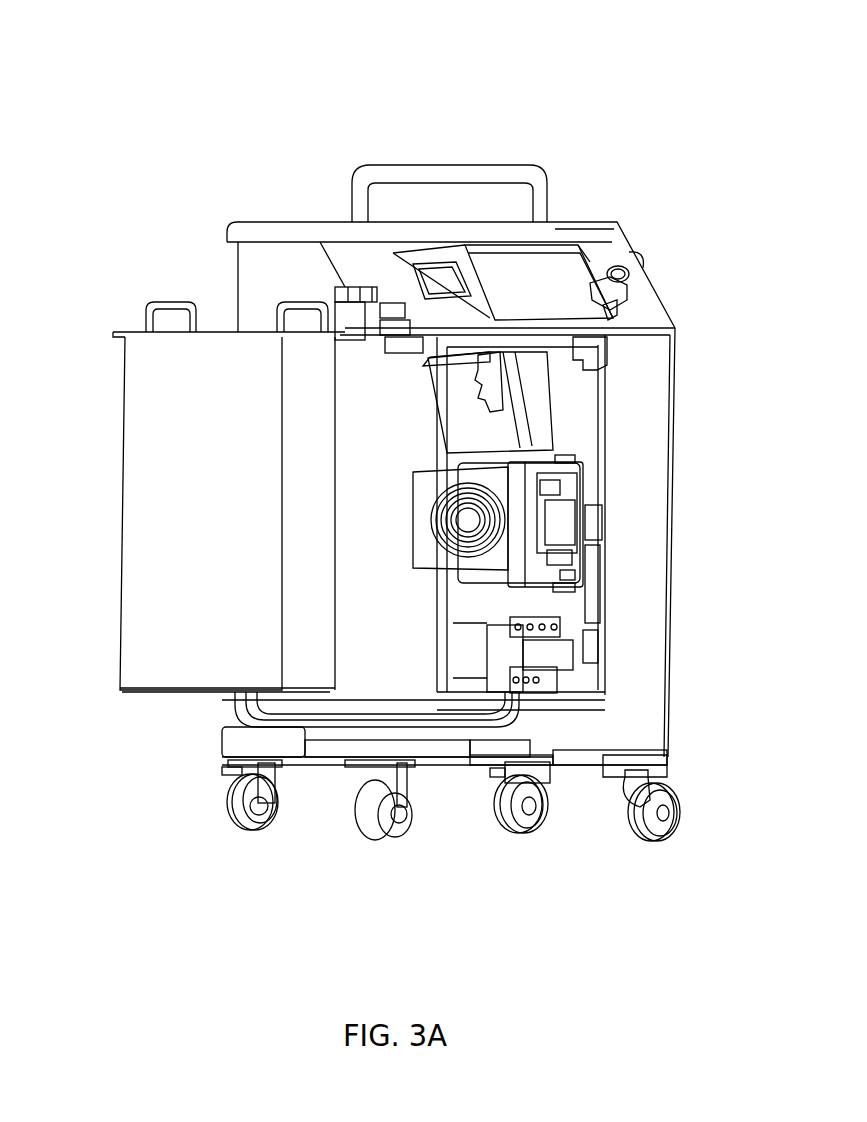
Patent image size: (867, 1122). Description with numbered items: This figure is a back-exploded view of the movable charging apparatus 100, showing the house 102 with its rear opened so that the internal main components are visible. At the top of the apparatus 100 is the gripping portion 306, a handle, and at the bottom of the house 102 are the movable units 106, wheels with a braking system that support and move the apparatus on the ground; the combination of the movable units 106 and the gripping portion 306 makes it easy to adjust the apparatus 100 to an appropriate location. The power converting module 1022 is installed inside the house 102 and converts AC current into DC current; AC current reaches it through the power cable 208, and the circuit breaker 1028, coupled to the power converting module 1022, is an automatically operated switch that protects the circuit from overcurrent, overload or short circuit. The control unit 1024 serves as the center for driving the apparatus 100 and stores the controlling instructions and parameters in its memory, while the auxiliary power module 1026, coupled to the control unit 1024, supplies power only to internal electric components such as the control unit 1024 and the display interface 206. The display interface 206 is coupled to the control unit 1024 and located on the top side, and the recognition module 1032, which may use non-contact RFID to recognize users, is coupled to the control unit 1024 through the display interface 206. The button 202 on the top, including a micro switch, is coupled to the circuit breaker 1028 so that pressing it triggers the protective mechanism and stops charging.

The movable charging apparatus 100 is at (60, 29).
The house 102 is at (700, 253).
The movable units 106 is at (662, 847).
The button 202 is at (613, 278).
The display interface 206 is at (539, 282).
The power cable 208 is at (588, 365).
The gripping portion 306 is at (523, 163).
The power converting module 1022 is at (229, 497).
The control unit 1024 is at (434, 406).
The auxiliary power module 1026 is at (410, 490).
The circuit breaker 1028 is at (485, 648).
The recognition module 1032 is at (433, 263).